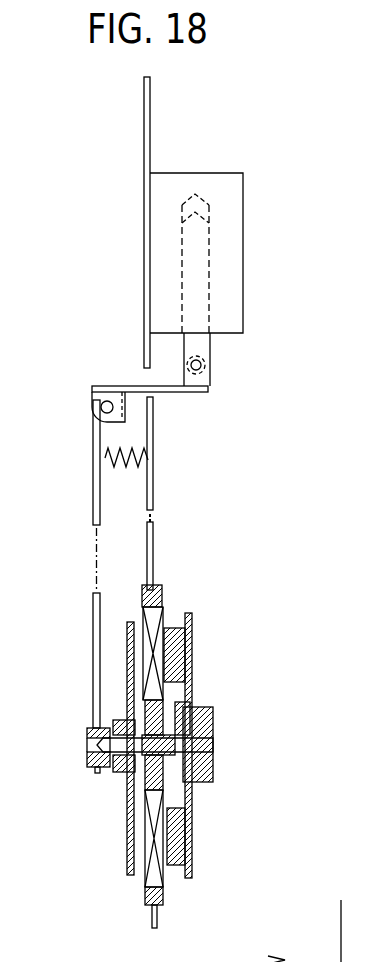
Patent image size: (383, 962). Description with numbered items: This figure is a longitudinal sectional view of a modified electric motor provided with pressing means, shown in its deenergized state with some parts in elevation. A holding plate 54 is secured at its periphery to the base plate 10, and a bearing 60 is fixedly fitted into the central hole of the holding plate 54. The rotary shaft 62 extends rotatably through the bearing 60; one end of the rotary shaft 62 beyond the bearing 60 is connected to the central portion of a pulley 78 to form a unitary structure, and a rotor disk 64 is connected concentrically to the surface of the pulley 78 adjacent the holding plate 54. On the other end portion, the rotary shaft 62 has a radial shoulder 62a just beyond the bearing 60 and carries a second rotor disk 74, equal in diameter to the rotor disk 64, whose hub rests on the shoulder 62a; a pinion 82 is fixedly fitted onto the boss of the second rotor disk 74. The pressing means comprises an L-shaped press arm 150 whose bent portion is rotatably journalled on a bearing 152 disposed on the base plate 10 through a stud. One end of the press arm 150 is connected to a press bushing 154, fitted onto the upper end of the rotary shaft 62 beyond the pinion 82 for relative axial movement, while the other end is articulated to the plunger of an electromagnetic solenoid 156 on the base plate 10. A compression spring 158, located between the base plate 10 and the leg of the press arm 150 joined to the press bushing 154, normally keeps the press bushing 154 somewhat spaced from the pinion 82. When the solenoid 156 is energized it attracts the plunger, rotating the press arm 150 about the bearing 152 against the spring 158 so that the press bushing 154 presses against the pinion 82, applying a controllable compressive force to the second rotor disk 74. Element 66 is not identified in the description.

The base plate 10 is at (144, 118).
The electromagnetic solenoid 156 is at (233, 173).
The bearing 152 is at (98, 387).
The compression spring 158 is at (132, 467).
The press arm 150 is at (94, 652).
The holding plate 54 is at (162, 605).
The bearing 60 is at (190, 702).
The radial shoulder 62a is at (145, 732).
The press bushing 154 is at (88, 760).
The rotary shaft 62 is at (213, 746).
The pinion 82 is at (120, 775).
The pulley 78 is at (213, 777).
The second rotor disk 74 is at (127, 856).
The rotor disk 64 is at (192, 832).
The spacer 66 is at (178, 858).